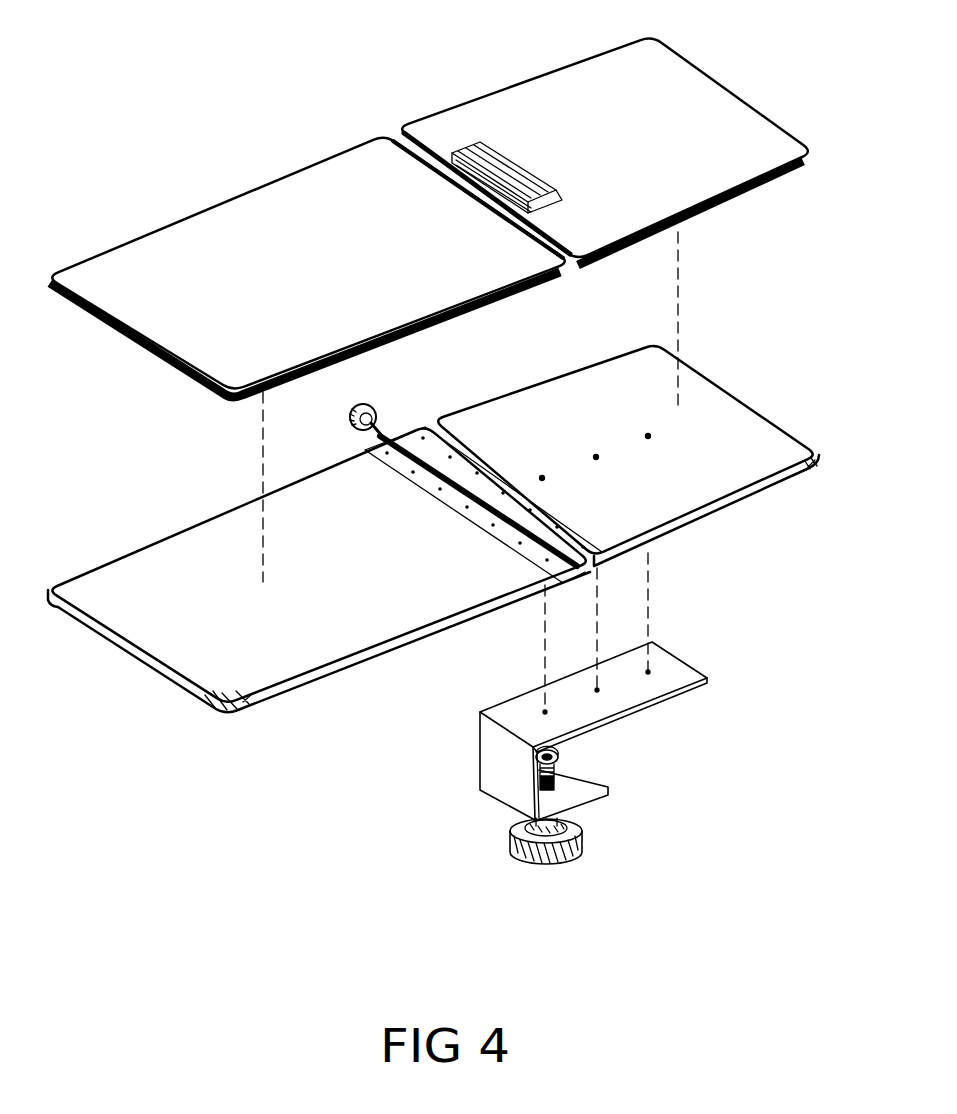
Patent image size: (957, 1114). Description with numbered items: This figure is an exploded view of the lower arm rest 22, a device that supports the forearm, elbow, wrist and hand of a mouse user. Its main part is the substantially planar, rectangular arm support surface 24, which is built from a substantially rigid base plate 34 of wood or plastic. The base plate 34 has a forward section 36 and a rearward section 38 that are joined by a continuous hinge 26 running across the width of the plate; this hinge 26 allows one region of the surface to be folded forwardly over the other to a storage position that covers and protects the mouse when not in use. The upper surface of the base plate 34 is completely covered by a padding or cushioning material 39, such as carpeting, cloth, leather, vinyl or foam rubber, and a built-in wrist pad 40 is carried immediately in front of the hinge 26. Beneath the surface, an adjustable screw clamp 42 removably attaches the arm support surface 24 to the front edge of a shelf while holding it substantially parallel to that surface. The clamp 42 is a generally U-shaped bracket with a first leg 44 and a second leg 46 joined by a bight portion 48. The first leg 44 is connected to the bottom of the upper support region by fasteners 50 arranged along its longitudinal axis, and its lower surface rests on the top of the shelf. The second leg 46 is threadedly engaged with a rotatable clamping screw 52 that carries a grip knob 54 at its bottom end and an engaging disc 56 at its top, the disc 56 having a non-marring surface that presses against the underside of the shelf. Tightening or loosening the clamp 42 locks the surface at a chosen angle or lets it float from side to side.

The lower arm rest 22 is at (128, 468).
The arm support surface 24 is at (802, 118).
The continuous hinge 26 is at (455, 503).
The base plate 34 is at (410, 650).
The forward section 36 is at (698, 472).
The rearward section 38 is at (253, 654).
The padding or cushioning material 39 is at (470, 118).
The wrist pad 40 is at (520, 163).
The adjustable screw clamp 42 is at (478, 737).
The first leg 44 is at (518, 715).
The second leg 46 is at (557, 788).
The bight portion 48 is at (492, 757).
The fasteners 50 is at (542, 478).
The clamping screw 52 is at (550, 777).
The grip knob 54 is at (567, 860).
The engaging disc 56 is at (560, 752).